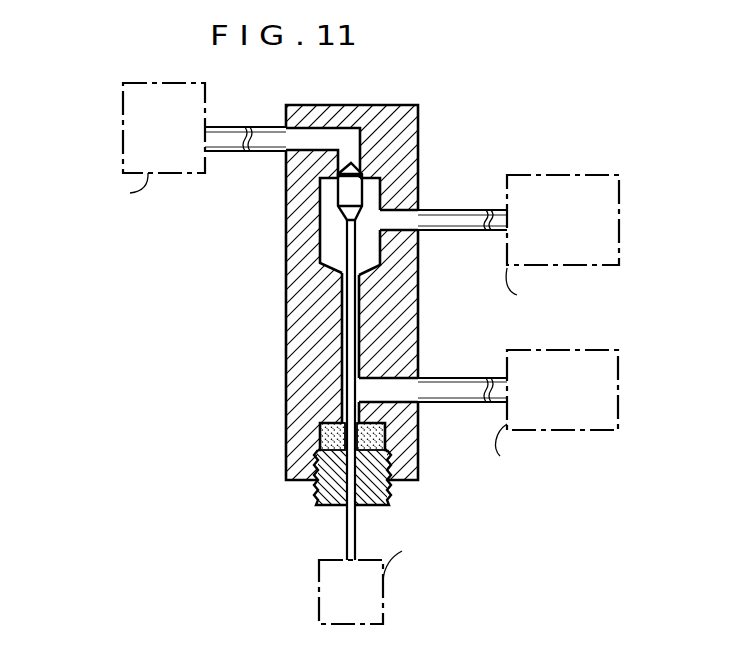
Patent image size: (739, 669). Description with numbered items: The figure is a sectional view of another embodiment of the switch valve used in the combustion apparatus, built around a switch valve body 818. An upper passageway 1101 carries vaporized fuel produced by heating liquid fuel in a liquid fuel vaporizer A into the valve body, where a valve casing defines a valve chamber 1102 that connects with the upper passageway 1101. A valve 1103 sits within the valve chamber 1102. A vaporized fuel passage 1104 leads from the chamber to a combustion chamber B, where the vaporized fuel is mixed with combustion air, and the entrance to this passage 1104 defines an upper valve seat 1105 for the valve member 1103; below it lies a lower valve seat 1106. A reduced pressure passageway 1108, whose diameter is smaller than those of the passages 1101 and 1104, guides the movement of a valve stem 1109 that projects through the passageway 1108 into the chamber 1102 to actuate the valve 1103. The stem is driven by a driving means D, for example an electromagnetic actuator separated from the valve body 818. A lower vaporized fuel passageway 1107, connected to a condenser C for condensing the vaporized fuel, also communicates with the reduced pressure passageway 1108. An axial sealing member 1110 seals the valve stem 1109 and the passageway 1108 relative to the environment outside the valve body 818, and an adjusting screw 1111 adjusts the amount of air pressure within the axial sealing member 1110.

The switch valve body 818 is at (377, 92).
The upper passageway 1101 is at (464, 210).
The valve chamber 1102 is at (322, 243).
The valve 1103 is at (338, 197).
The vaporized fuel passage 1104 is at (233, 127).
The upper valve seat 1105 is at (363, 174).
The lower valve seat 1106 is at (360, 275).
The lower vaporized fuel passageway 1107 is at (418, 378).
The reduced pressure passageway 1108 is at (355, 322).
The valve stem 1109 is at (348, 534).
The axial sealing member 1110 is at (373, 433).
The adjusting screw 1111 is at (383, 503).
The liquid fuel vaporizer A is at (555, 181).
The combustion chamber B is at (168, 84).
The condenser C is at (563, 354).
The driving means D is at (377, 592).